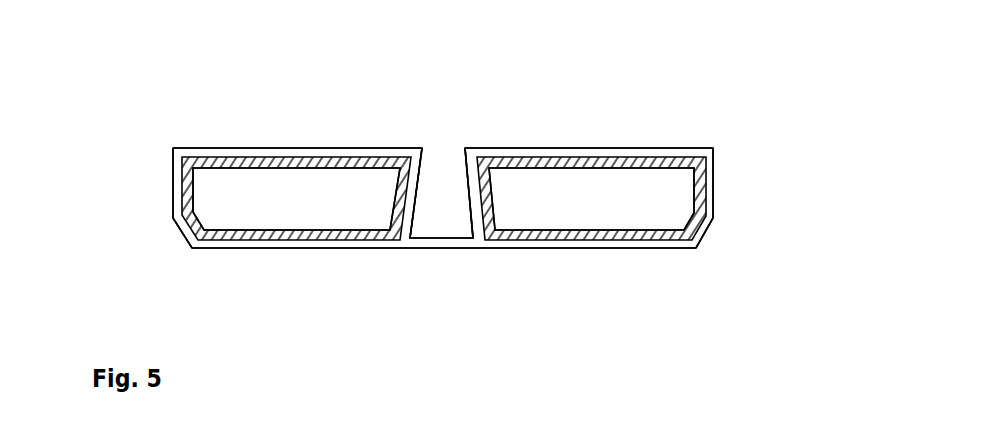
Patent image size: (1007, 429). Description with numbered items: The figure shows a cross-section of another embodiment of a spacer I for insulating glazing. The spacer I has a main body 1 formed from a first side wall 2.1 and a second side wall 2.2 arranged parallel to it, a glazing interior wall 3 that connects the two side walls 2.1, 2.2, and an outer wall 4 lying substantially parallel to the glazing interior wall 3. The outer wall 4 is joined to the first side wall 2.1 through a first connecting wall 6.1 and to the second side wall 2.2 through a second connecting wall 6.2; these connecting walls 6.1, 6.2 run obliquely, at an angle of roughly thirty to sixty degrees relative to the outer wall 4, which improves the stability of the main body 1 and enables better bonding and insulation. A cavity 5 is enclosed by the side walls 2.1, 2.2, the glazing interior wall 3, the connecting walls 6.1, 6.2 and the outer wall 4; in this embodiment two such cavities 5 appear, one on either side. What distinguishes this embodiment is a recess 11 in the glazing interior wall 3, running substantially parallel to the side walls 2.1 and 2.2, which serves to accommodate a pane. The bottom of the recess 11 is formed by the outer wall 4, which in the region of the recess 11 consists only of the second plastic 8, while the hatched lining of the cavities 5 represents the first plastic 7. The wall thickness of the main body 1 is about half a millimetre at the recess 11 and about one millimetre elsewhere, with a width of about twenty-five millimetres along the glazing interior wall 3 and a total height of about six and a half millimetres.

The main body 1 is at (685, 124).
The spacer I is at (139, 78).
The first side wall 2.1 is at (176, 191).
The second side wall 2.2 is at (715, 168).
The glazing interior wall 3 is at (352, 148).
The outer wall 4 is at (462, 248).
The cavity 5 is at (290, 181).
The first connecting wall 6.1 is at (185, 240).
The second connecting wall 6.2 is at (702, 238).
The first plastic 7 is at (222, 163).
The second plastic 8 is at (597, 247).
The recess 11 is at (450, 183).